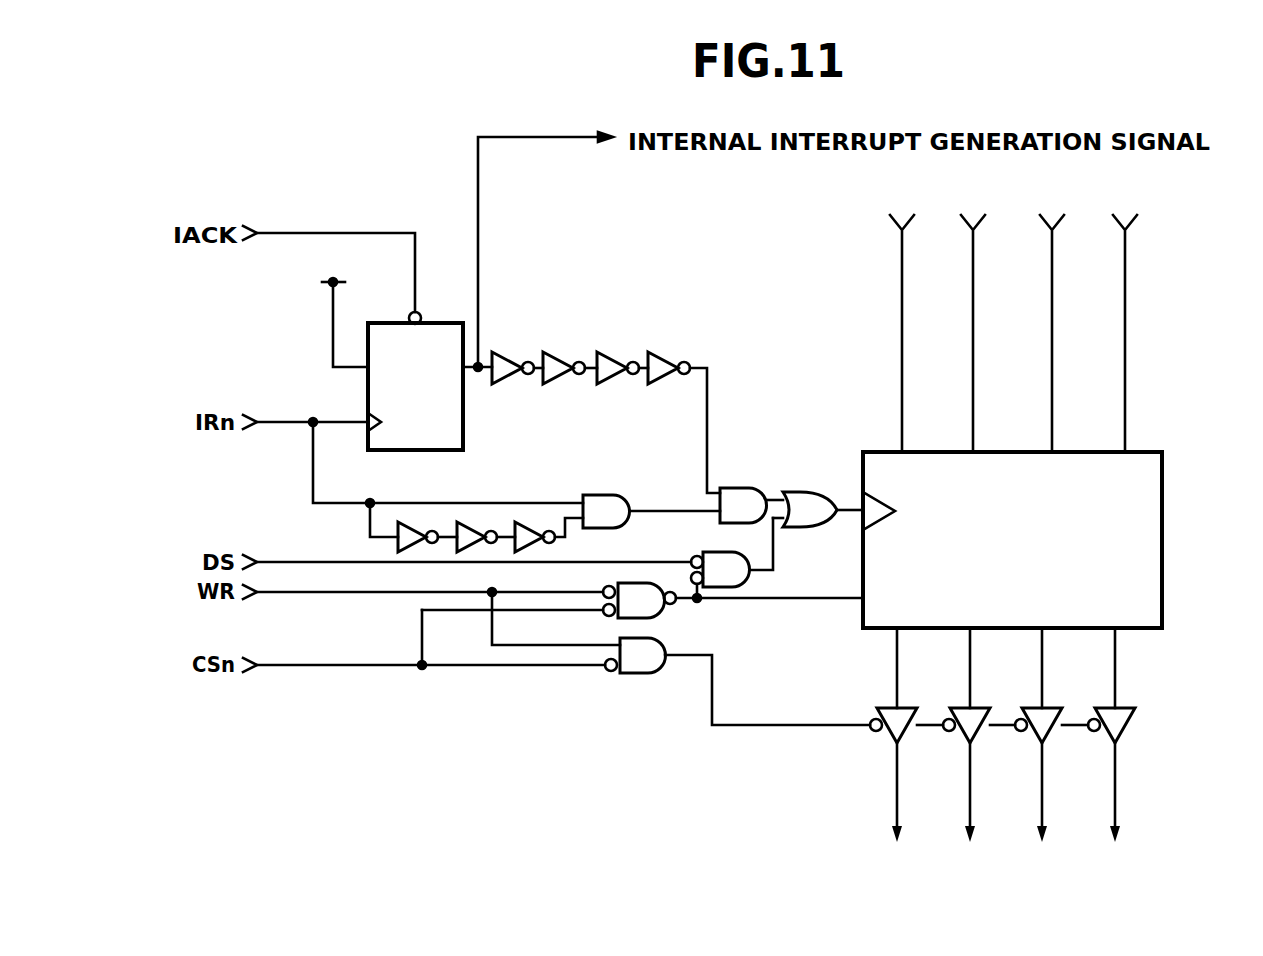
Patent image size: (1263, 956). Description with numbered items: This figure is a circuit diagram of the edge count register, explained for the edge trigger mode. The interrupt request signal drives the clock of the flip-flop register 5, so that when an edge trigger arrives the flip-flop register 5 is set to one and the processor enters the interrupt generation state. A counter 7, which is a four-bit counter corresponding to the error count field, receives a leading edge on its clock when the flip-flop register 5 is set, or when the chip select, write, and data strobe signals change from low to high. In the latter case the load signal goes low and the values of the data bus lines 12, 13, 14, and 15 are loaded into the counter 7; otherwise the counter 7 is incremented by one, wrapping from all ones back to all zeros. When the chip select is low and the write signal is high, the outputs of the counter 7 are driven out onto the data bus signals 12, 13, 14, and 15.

The F/F register 5 is at (433, 314).
The counter 7 is at (882, 452).
The data line D12 12 is at (906, 531).
The data line D13 13 is at (979, 531).
The data line D14 14 is at (1051, 530).
The data line D15 15 is at (1119, 529).